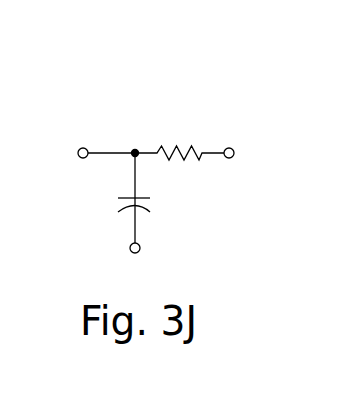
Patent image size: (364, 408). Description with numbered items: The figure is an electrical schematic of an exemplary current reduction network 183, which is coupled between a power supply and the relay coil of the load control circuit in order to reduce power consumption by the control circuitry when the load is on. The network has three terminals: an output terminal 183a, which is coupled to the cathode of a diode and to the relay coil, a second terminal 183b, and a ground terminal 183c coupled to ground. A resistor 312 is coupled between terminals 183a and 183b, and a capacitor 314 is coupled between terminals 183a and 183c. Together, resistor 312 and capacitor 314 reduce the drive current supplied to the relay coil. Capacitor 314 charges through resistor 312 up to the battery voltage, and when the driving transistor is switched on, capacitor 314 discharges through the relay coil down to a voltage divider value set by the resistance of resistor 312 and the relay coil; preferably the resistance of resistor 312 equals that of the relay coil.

The current reduction network 183 is at (119, 92).
The output terminal 183a is at (78, 154).
The terminal 183b is at (233, 157).
The ground terminal 183c is at (135, 253).
The resistor 312 is at (198, 148).
The capacitor 314 is at (142, 208).